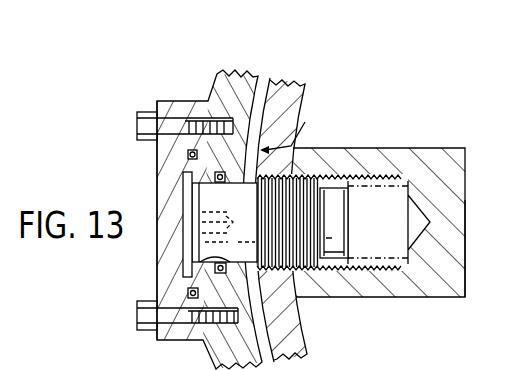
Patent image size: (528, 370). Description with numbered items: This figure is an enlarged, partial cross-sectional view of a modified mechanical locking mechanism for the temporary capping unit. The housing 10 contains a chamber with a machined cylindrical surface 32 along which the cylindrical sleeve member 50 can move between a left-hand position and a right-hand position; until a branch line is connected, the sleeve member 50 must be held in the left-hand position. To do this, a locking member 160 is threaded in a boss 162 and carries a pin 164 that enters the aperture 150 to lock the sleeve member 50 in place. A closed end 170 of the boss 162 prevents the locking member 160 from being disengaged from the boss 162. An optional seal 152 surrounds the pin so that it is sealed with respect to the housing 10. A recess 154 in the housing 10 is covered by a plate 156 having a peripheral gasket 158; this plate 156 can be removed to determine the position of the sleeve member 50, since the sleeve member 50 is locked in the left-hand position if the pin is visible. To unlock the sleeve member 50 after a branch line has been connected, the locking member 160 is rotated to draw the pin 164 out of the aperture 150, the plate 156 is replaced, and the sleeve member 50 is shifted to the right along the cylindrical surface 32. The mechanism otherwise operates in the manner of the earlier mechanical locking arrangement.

The housing 10 is at (218, 86).
The cylindrical surface 32 is at (268, 78).
The sleeve member 50 is at (292, 333).
The aperture 150 is at (192, 250).
The seal 152 is at (212, 176).
The recess 154 is at (183, 242).
The plate 156 is at (160, 192).
The peripheral gasket 158 is at (185, 293).
The locking member 160 is at (328, 190).
The boss 162 is at (425, 148).
The pin 164 is at (300, 127).
The closed end 170 is at (457, 281).